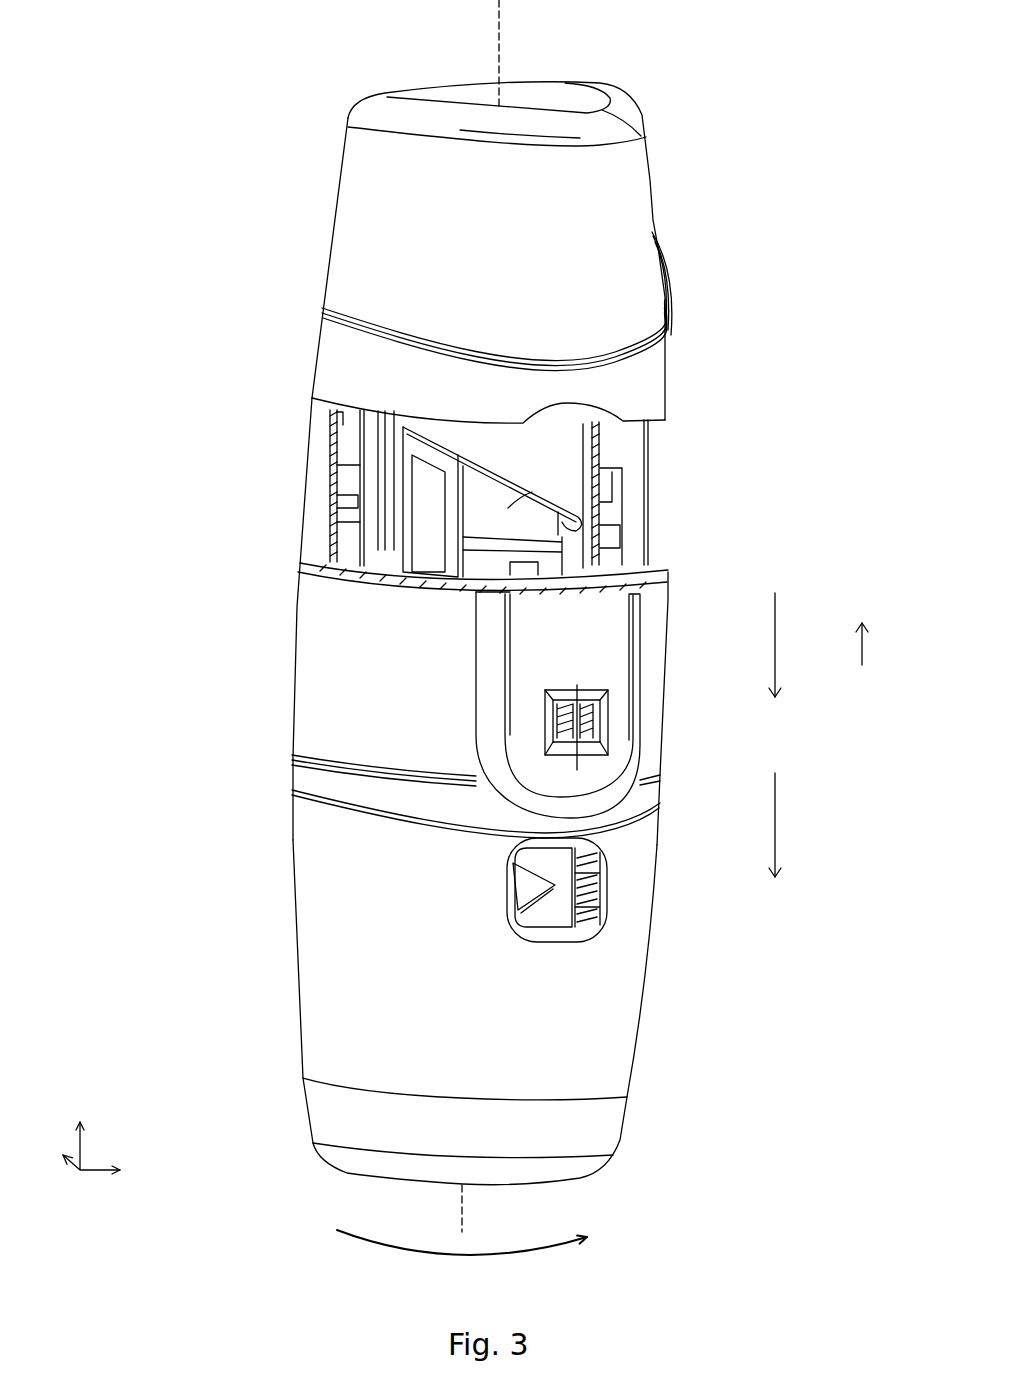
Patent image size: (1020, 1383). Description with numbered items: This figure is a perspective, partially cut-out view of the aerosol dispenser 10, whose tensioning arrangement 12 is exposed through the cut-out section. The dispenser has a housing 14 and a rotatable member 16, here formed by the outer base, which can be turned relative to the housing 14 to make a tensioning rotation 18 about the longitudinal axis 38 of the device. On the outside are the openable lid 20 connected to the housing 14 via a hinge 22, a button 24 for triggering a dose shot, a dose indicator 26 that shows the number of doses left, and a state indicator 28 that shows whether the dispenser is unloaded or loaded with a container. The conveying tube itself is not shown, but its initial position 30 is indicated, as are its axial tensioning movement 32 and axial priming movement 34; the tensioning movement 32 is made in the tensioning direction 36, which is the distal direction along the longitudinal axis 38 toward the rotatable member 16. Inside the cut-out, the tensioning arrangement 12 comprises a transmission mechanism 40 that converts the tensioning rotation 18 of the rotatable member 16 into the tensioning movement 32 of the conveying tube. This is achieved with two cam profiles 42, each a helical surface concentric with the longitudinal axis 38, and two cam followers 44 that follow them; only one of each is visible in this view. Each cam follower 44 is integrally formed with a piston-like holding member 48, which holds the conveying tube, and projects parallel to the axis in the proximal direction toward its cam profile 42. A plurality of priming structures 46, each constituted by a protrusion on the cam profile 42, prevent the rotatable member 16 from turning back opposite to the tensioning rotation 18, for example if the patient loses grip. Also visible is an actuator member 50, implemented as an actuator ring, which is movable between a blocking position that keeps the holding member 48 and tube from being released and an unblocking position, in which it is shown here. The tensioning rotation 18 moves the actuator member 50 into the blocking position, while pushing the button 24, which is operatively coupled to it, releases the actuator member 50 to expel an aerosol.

The aerosol dispenser 10 is at (162, 61).
The tensioning arrangement 12 is at (171, 326).
The housing 14 is at (391, 681).
The rotatable member 16 is at (466, 1027).
The tensioning rotation 18 is at (462, 1262).
The openable lid 20 is at (388, 203).
The hinge 22 is at (667, 295).
The button 24 is at (591, 652).
The dose indicator 26 is at (545, 723).
The state indicator 28 is at (507, 882).
The initial position 30 is at (142, 653).
The tensioning movement 32 is at (793, 645).
The priming movement 34 is at (879, 644).
The tensioning direction 36 is at (793, 825).
The longitudinal axis 38 is at (500, 43).
The transmission mechanism 40 is at (269, 433).
The cam profile 42 is at (495, 470).
The cam follower 44 is at (427, 530).
The priming structure 46 is at (543, 491).
The holding member 48 is at (567, 570).
The actuator member 50 is at (345, 483).